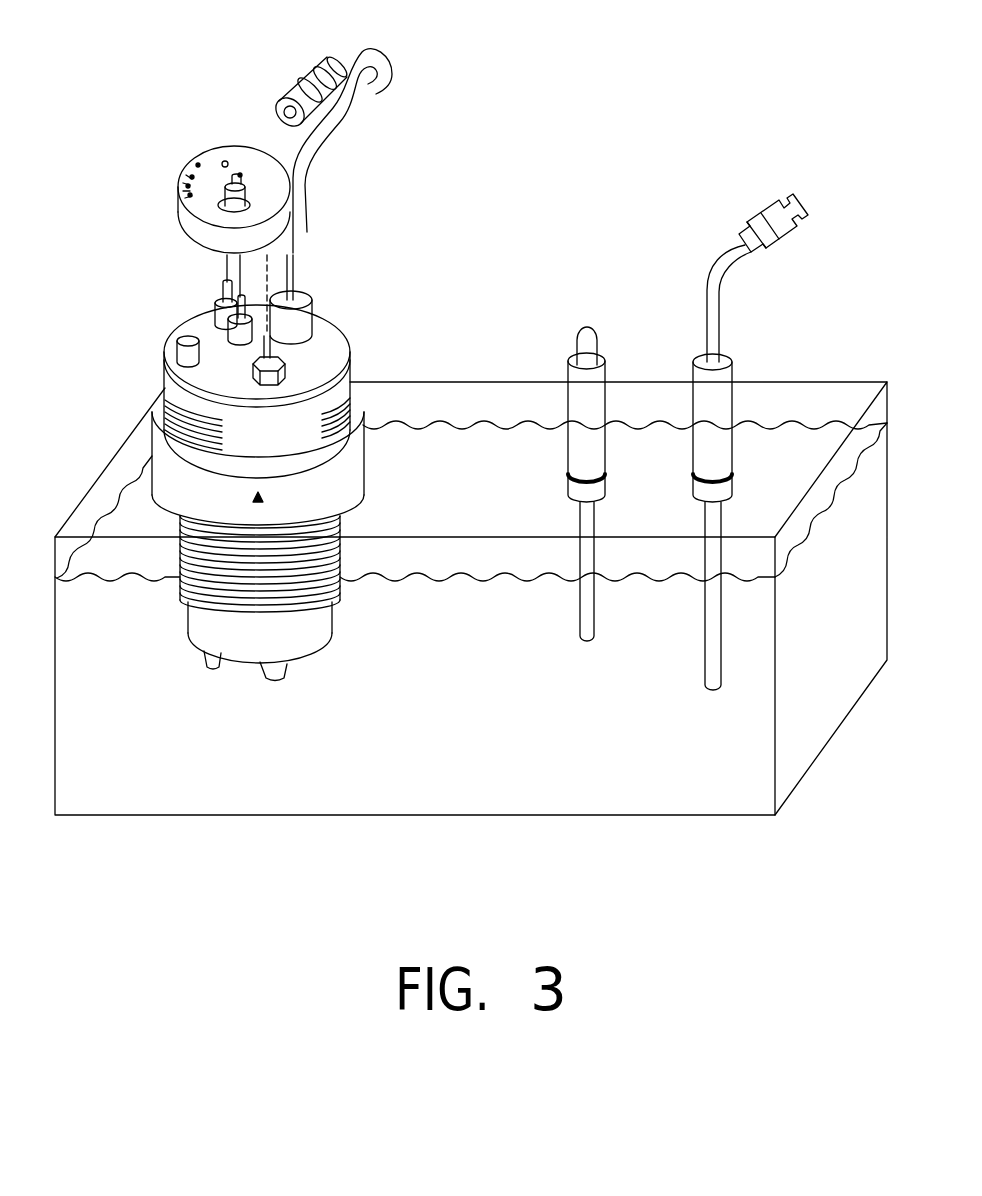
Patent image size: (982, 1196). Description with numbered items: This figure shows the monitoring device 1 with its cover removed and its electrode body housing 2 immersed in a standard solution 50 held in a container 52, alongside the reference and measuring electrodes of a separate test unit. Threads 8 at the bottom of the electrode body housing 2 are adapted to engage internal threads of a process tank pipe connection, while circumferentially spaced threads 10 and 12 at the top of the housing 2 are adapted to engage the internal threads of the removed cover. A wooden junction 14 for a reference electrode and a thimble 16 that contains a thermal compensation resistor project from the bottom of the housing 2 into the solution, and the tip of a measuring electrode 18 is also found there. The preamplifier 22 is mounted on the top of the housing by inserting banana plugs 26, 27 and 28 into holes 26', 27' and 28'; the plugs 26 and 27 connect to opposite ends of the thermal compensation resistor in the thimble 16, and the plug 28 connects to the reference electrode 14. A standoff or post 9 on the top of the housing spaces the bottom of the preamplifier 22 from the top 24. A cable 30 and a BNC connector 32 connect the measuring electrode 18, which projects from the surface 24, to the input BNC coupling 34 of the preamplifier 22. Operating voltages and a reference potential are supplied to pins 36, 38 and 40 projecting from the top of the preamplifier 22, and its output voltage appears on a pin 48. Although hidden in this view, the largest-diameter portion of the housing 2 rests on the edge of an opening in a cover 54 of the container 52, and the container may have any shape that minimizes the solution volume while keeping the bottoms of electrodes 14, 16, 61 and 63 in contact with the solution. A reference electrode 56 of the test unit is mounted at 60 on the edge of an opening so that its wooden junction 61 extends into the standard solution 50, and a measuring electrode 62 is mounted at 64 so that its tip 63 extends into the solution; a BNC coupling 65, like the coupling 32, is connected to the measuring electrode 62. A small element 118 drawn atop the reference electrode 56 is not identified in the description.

The monitoring device 1 is at (363, 249).
The electrode body housing 2 is at (365, 453).
The threads 8 is at (337, 548).
The standoff or post 9 is at (178, 347).
The threads 10 is at (229, 391).
The threads 12 is at (350, 368).
The wooden junction for a reference electrode 14 is at (276, 680).
The thimble 16 is at (206, 669).
The measuring electrode 18 is at (310, 288).
The preamplifier 22 is at (190, 222).
The top surface 24 is at (212, 175).
The banana plug 26 is at (156, 292).
The banana plug 27 is at (189, 295).
The banana plug 28 is at (344, 306).
The hole 26' is at (244, 137).
The hole 27' is at (269, 154).
The hole 28' is at (276, 271).
The cable 30 is at (390, 73).
The BNC connector 32 is at (355, 78).
The input BNC coupling 34 is at (228, 204).
The pin 36 is at (190, 195).
The pin 38 is at (188, 186).
The pin 40 is at (192, 177).
The pin 48 is at (198, 165).
The standard solution 50 is at (538, 507).
The container 52 is at (850, 657).
The cover 54 is at (428, 402).
The reference electrode 56 is at (606, 371).
The mounting 60 is at (606, 494).
The wooden junction 61 is at (592, 640).
The measuring electrode 62 is at (733, 371).
The tip 63 is at (718, 688).
The mounting 64 is at (733, 494).
The BNC coupling 65 is at (795, 232).
The probe cap 118 is at (589, 328).